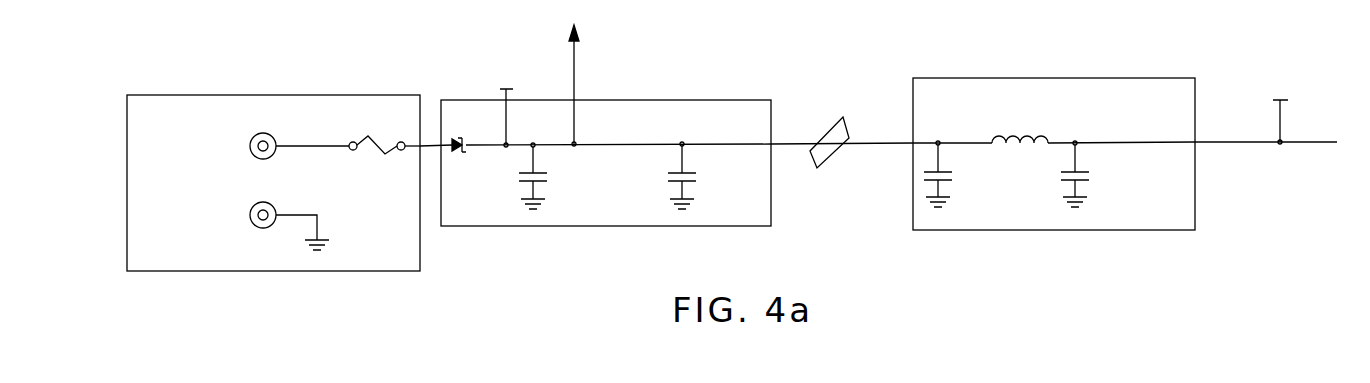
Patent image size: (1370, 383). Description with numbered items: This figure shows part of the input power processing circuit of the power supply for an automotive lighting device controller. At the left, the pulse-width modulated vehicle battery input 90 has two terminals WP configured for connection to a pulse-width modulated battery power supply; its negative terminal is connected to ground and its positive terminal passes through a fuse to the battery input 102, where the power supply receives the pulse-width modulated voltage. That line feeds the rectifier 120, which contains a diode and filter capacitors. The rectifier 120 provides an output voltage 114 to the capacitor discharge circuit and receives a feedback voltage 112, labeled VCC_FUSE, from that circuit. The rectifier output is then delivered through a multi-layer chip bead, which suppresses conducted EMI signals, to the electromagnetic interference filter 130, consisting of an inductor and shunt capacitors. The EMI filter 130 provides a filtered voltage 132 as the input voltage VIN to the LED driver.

The pulse-width modulated vehicle battery input 90 is at (340, 270).
The battery input 102 is at (436, 130).
The feedback voltage 112 is at (500, 98).
The output voltage 114 is at (593, 85).
The rectifier 120 is at (648, 228).
The electromagnetic interference (EMI) filter 130 is at (1067, 232).
The filtered voltage 132 is at (1266, 114).